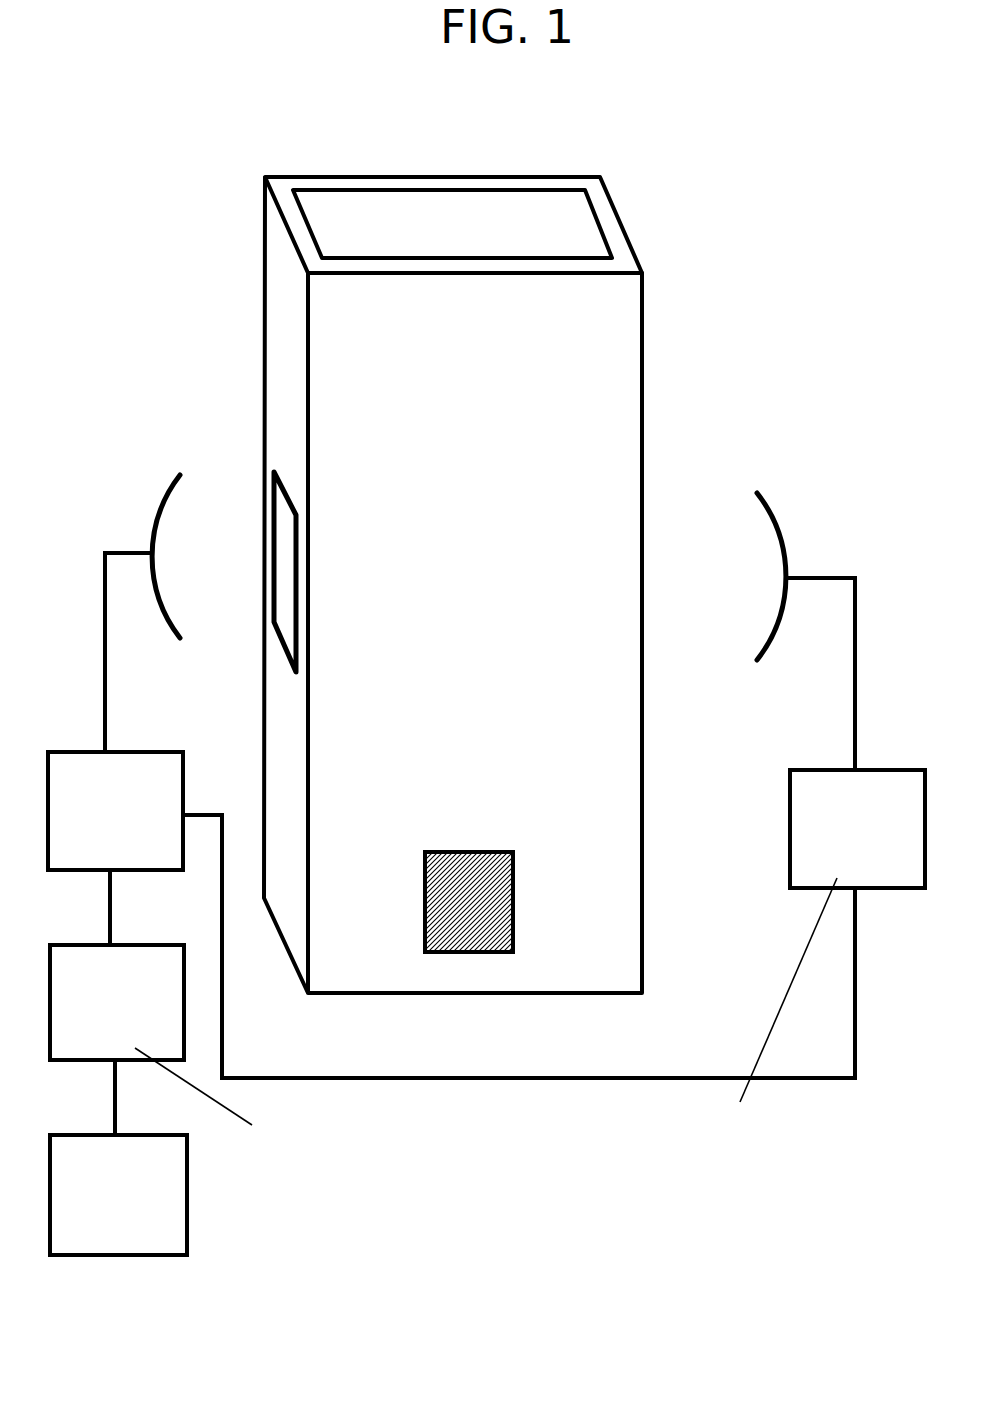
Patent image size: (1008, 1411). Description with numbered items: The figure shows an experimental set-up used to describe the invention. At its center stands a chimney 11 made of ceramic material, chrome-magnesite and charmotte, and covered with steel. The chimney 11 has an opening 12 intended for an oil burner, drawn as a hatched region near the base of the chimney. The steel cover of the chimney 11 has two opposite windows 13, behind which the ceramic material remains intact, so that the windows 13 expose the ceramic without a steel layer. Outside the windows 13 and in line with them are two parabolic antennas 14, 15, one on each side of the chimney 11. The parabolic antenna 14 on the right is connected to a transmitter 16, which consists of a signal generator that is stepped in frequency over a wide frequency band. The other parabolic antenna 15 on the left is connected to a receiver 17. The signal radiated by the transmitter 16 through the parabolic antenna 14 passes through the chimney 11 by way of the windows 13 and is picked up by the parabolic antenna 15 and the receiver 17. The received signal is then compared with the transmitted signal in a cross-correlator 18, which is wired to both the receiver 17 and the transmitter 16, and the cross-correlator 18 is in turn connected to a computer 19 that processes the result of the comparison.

The chimney 11 is at (634, 163).
The opening 12 is at (469, 902).
The windows 13 is at (285, 567).
The parabolic antenna 14 is at (780, 525).
The parabolic antenna 15 is at (160, 493).
The transmitter 16 is at (788, 954).
The receiver 17 is at (115, 811).
The cross-correlator 18 is at (275, 1058).
The computer 19 is at (118, 1195).